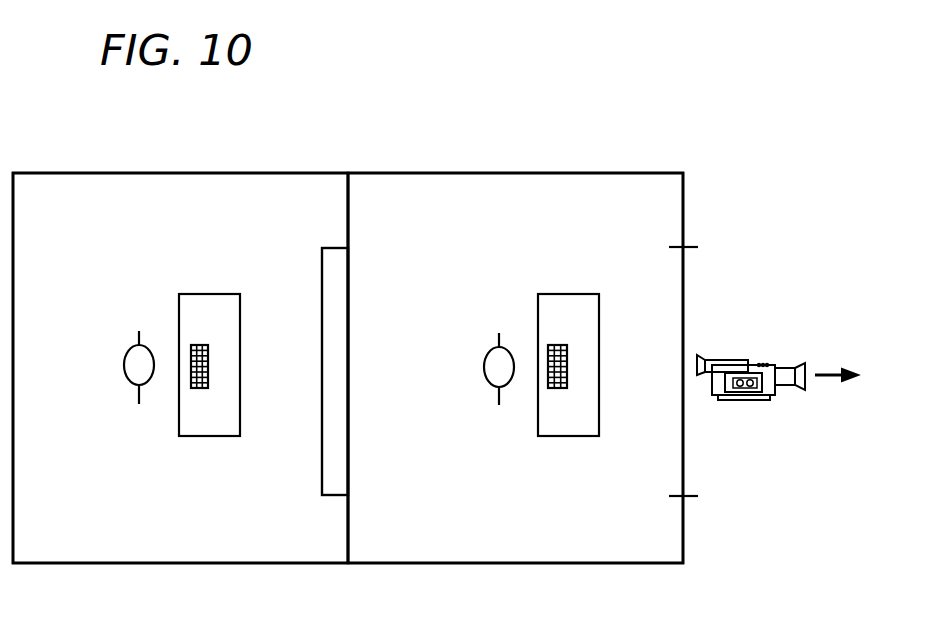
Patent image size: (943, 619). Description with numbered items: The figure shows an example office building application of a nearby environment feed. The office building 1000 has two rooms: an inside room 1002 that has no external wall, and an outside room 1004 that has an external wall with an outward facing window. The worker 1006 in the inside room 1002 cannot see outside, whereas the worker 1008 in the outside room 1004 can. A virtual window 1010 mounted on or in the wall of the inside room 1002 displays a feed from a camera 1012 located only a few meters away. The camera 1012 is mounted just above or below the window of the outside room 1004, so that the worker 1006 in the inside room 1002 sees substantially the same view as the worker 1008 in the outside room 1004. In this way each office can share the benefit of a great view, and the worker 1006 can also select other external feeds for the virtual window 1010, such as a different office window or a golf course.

The office building 1000 is at (468, 112).
The inside room 1002 is at (194, 190).
The outside room 1004 is at (514, 192).
The worker 1006 is at (128, 365).
The worker 1008 is at (487, 366).
The virtual window 1010 is at (322, 477).
The camera 1012 is at (745, 403).